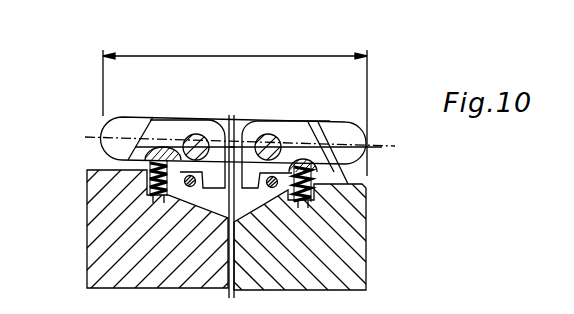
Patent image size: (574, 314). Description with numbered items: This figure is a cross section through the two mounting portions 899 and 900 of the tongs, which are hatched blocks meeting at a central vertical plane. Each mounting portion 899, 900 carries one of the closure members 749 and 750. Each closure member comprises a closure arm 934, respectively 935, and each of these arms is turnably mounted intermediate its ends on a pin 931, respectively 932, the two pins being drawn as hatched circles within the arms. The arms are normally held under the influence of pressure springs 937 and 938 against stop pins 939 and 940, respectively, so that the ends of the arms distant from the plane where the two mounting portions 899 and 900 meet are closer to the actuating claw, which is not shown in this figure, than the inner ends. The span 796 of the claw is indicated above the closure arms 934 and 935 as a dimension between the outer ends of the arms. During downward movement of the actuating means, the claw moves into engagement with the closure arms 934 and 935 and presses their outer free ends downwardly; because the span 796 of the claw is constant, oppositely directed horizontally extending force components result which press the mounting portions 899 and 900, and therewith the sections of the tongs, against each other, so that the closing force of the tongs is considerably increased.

The span of the claw 796 is at (292, 56).
The closure arm 934 is at (118, 117).
The closure arm 935 is at (357, 112).
The closure member 749 is at (134, 111).
The closure member 750 is at (325, 116).
The pin 931 is at (197, 185).
The pin 932 is at (265, 173).
The pressure spring 937 is at (145, 167).
The pressure spring 938 is at (310, 173).
The stop pin 939 is at (195, 186).
The stop pin 940 is at (268, 187).
The mounting portion 900 is at (93, 223).
The mounting portion 899 is at (353, 243).